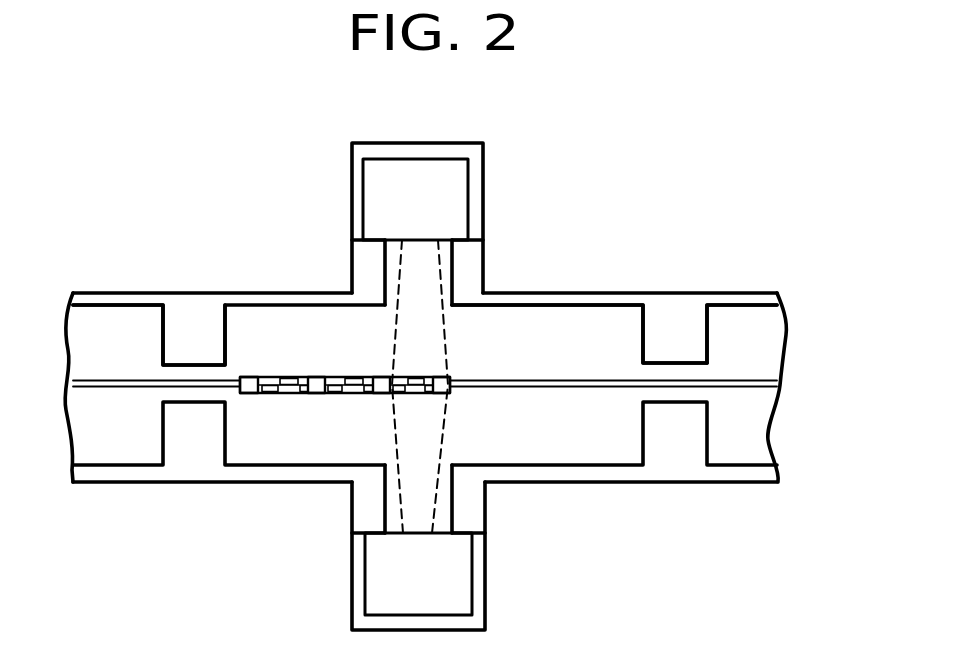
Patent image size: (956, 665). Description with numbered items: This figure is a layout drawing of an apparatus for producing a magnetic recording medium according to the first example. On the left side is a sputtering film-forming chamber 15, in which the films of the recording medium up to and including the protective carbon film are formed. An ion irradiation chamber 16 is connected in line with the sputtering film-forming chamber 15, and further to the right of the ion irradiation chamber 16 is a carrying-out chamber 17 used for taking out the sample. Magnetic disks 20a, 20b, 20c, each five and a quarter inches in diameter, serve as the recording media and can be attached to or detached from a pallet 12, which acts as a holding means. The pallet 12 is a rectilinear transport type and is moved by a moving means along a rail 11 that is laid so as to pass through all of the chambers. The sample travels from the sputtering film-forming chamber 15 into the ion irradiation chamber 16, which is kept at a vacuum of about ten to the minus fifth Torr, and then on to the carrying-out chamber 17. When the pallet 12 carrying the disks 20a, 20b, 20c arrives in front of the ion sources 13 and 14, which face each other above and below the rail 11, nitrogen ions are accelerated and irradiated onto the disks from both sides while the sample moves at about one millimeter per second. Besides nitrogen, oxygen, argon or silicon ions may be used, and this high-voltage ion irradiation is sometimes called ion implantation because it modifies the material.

The rail 11 is at (757, 380).
The pallet 12 is at (249, 377).
The ion source 13 is at (483, 190).
The ion source 14 is at (485, 590).
The sputtering film-forming chamber 15 is at (117, 318).
The ion irradiation chamber 16 is at (605, 335).
The carrying-out chamber 17 is at (738, 337).
The magnetic disk 20a is at (268, 377).
The magnetic disk 20b is at (338, 393).
The magnetic disk 20c is at (402, 393).